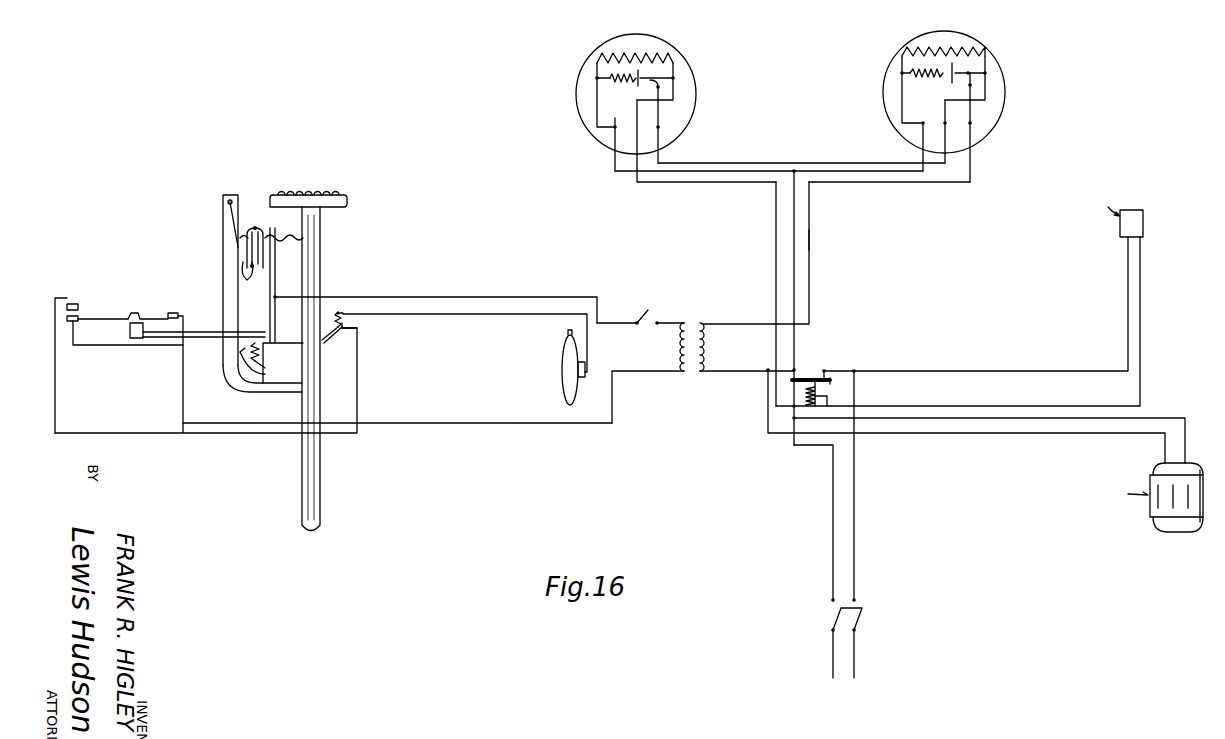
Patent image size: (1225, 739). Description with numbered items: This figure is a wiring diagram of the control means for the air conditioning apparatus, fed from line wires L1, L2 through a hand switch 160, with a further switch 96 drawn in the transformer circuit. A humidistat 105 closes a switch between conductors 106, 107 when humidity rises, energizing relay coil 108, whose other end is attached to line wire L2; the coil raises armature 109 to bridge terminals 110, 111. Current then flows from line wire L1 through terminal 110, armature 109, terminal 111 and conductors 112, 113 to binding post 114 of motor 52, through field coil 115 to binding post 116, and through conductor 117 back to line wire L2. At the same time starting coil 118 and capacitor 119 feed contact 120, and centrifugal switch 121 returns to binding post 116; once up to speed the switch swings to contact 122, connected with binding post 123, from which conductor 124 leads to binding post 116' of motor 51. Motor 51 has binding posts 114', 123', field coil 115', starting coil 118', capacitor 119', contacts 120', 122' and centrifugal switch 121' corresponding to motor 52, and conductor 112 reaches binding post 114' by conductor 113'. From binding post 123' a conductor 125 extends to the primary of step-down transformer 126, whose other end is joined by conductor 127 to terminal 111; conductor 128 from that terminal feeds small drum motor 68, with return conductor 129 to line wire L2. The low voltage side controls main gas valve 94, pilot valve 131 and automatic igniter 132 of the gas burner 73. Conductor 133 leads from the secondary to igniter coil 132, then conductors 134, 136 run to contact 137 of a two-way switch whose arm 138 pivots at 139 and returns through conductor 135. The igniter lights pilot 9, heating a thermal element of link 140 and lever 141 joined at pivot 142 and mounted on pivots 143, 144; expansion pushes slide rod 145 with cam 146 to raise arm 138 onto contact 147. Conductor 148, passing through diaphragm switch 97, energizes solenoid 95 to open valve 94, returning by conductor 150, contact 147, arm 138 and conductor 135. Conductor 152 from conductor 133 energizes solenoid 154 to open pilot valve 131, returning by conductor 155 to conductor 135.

The pilot 9 is at (240, 203).
The motor 51 is at (1004, 105).
The motor 52 is at (587, 110).
The small motor 68 is at (1150, 520).
The gas burner 73 is at (335, 212).
The main gas valve 94 is at (325, 347).
The solenoid 95 is at (345, 325).
The switch 96 is at (641, 320).
The diaphragm switch 97 is at (565, 378).
The humidistat 105 is at (1145, 230).
The conductor 106 is at (1030, 370).
The conductor 107 is at (1003, 406).
The relay coil 108 is at (829, 397).
The armature 109 is at (826, 370).
The terminal 110 is at (834, 381).
The terminal 111 is at (800, 376).
The conductor 112 is at (809, 256).
The conductor 113 is at (801, 156).
The conductor 113' is at (889, 190).
The binding post 114 is at (596, 126).
The binding post 114' is at (905, 113).
The field coil 115 is at (652, 48).
The field coil 115' is at (968, 47).
The binding post 116 is at (699, 155).
The binding post 116' is at (992, 137).
The conductor 117 is at (775, 242).
The starting coil 118 is at (615, 91).
The starting coil 118' is at (923, 86).
The capacitor 119 is at (688, 62).
The capacitor 119' is at (947, 89).
The contact 120 is at (646, 88).
The contact 120' is at (999, 68).
The centrifugal switch 121 is at (692, 81).
The centrifugal switch 121' is at (1028, 79).
The contact 122 is at (698, 96).
The contact 122' is at (1020, 88).
The binding post 123 is at (701, 125).
The binding post 123' is at (1016, 141).
The conductor 124 is at (812, 170).
The conductor 125 is at (812, 240).
The step-down transformer 126 is at (702, 328).
The conductor 127 is at (724, 368).
The conductor 128 is at (1066, 434).
The return conductor 129 is at (979, 421).
The pilot valve 131 is at (238, 388).
The automatic igniter 132 is at (296, 240).
The conductor 133 is at (395, 297).
The conductor 134 is at (343, 313).
The conductor 135 is at (425, 424).
The conductor 136 is at (92, 348).
The contact 137 is at (78, 321).
The switch arm 138 is at (135, 315).
The pivot 139 is at (180, 315).
The link 140 is at (232, 245).
The lever 141 is at (260, 238).
The pivot 142 is at (255, 226).
The pivot 143 is at (246, 268).
The pivot 144 is at (276, 268).
The slide rod 145 is at (180, 340).
The cam 146 is at (136, 340).
The contact 147 is at (78, 306).
The conductor 148 is at (452, 316).
The conductor 150 is at (360, 370).
The conductor 152 is at (263, 352).
The solenoid 154 is at (262, 366).
The conductor 155 is at (260, 383).
The hand switch 160 is at (868, 612).
The line wire L1 is at (855, 540).
The line wire L2 is at (833, 535).